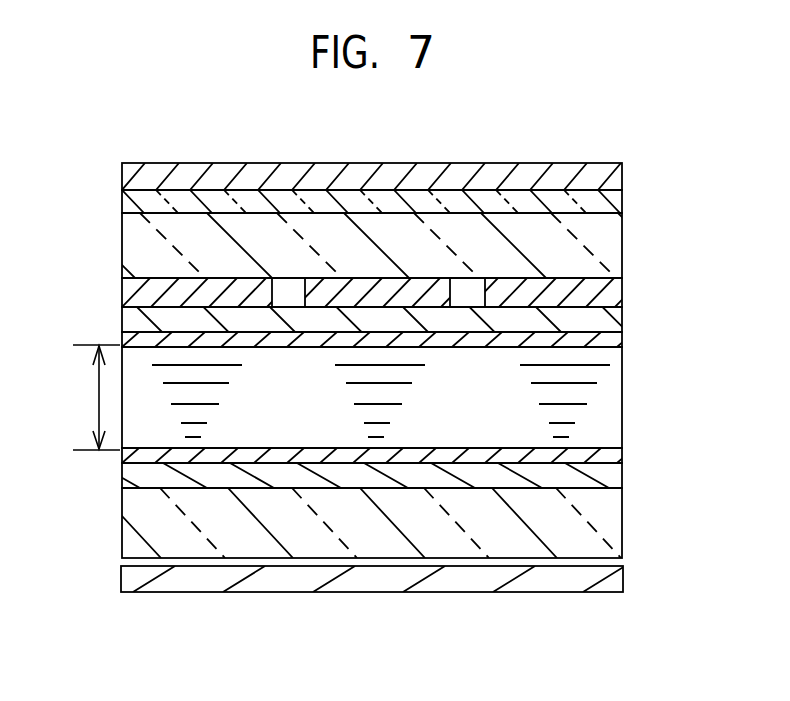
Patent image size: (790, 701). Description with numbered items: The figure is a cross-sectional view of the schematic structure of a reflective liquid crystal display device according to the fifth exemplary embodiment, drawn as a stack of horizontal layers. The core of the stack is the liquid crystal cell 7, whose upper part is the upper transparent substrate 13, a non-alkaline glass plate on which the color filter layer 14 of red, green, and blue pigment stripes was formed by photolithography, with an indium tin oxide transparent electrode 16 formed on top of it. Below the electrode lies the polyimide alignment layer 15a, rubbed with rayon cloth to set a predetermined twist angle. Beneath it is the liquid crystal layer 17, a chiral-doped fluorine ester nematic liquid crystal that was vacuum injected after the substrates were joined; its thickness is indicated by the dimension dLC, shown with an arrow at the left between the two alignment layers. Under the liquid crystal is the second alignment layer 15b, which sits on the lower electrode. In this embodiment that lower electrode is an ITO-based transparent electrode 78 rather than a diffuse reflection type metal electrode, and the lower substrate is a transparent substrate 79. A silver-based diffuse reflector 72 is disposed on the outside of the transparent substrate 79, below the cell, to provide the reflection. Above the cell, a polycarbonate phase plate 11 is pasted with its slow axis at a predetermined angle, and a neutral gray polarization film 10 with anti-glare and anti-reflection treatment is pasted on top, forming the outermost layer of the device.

The polarization film 10 is at (623, 175).
The phase plate 11 is at (623, 203).
The upper transparent substrate 13 is at (623, 253).
The color filter layer 14 is at (623, 285).
The transparent electrode 16 is at (623, 312).
The alignment layer 15a is at (623, 340).
The liquid crystal layer 17 is at (623, 402).
The alignment layer 15b is at (623, 453).
The transparent electrode 78 is at (623, 485).
The transparent substrate 79 is at (390, 523).
The diffuse reflector 72 is at (623, 577).
The liquid crystal cell 7 is at (400, 385).
The thickness of the liquid crystal layer dLC is at (96, 393).